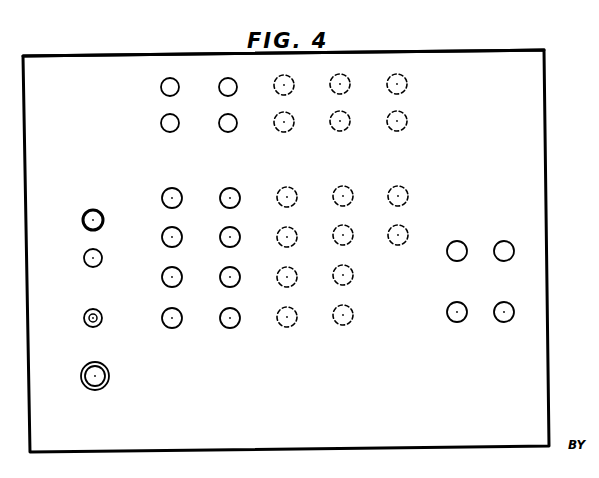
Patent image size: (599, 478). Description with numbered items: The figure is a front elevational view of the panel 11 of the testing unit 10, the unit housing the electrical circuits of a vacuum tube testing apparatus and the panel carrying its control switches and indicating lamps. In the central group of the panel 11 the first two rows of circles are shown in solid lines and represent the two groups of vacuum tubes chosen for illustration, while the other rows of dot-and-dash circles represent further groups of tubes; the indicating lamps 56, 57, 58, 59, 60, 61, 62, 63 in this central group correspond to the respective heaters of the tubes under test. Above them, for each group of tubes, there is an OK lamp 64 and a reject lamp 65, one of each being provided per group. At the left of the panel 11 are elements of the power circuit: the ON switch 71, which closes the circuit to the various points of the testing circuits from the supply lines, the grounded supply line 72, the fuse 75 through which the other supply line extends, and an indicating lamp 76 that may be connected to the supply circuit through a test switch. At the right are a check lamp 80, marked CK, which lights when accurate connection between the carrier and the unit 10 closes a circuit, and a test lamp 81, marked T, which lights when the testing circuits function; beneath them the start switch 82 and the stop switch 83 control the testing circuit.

The testing unit 10 is at (538, 181).
The panel 11 is at (510, 66).
The indicating lamp 56 is at (164, 321).
The indicating lamp 57 is at (164, 281).
The indicating lamp 58 is at (164, 241).
The indicating lamp 59 is at (164, 201).
The indicating lamp 60 is at (232, 327).
The indicating lamp 61 is at (232, 286).
The indicating lamp 62 is at (232, 246).
The indicating lamp 63 is at (232, 207).
The OK lamp 64 is at (220, 84).
The reject lamp 65 is at (220, 120).
The ON switch 71 is at (85, 323).
The supply line 72 is at (87, 386).
The fuse 75 is at (84, 220).
The indicating lamp 76 is at (86, 264).
The check lamp 80 is at (505, 241).
The test lamp 81 is at (457, 241).
The start switch 82 is at (455, 302).
The stop switch 83 is at (505, 302).